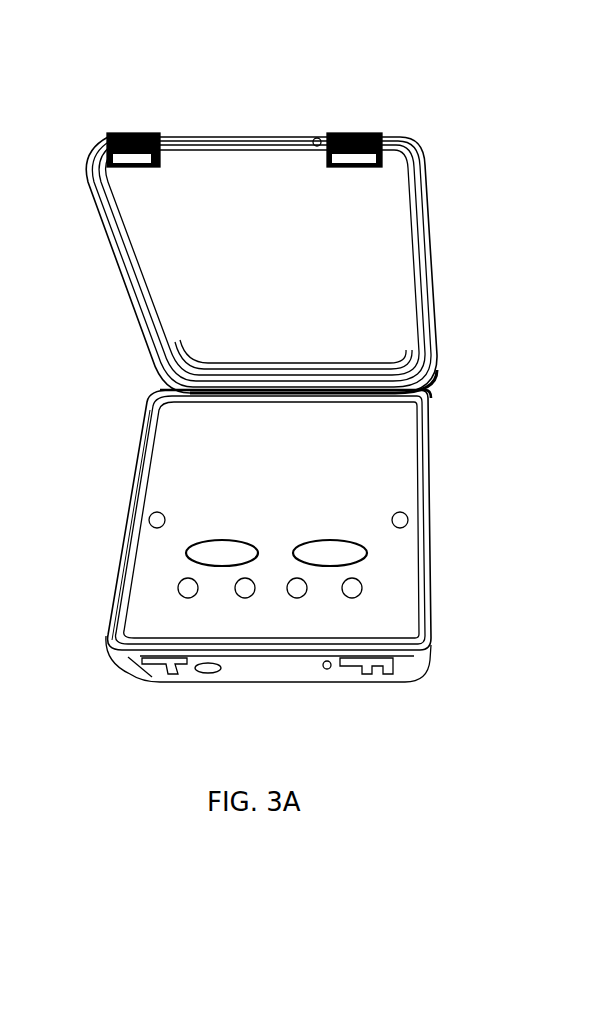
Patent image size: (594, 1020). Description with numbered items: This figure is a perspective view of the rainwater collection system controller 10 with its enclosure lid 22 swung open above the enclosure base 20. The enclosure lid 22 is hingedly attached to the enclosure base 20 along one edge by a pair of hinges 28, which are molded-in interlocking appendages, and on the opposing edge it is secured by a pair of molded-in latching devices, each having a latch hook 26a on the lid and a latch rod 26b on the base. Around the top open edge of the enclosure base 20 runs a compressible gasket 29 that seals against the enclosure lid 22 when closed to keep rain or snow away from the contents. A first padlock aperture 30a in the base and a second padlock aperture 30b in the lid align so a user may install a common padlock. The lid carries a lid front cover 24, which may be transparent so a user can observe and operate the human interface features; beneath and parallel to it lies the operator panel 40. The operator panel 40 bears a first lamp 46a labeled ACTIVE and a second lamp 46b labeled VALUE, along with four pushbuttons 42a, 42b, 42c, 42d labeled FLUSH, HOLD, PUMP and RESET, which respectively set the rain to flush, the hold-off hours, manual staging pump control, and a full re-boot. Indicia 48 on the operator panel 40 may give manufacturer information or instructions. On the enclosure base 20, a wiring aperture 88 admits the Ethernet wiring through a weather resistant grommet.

The rainwater collection system controller 10 is at (479, 403).
The enclosure base 20 is at (134, 484).
The enclosure lid 22 is at (201, 138).
The lid front cover 24 is at (245, 170).
The latch hook 26a is at (143, 133).
The latch rod 26b is at (148, 678).
The hinge 28 is at (384, 386).
The compressible gasket 29 is at (115, 570).
The first padlock aperture 30a is at (330, 668).
The second padlock aperture 30b is at (318, 138).
The operator panel 40 is at (388, 476).
The first pushbutton 42a is at (189, 591).
The second pushbutton 42b is at (247, 597).
The third pushbutton 42c is at (296, 594).
The fourth pushbutton 42d is at (362, 586).
The first lamp 46a is at (188, 547).
The second lamp 46b is at (368, 553).
The indicia 48 is at (231, 461).
The wiring aperture 88 is at (203, 673).